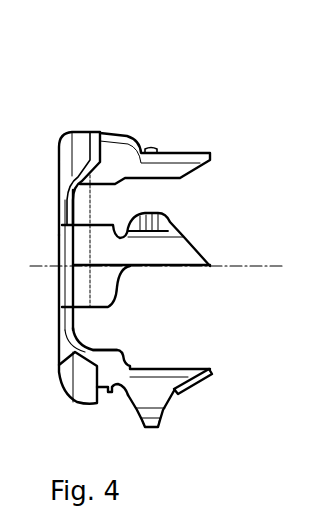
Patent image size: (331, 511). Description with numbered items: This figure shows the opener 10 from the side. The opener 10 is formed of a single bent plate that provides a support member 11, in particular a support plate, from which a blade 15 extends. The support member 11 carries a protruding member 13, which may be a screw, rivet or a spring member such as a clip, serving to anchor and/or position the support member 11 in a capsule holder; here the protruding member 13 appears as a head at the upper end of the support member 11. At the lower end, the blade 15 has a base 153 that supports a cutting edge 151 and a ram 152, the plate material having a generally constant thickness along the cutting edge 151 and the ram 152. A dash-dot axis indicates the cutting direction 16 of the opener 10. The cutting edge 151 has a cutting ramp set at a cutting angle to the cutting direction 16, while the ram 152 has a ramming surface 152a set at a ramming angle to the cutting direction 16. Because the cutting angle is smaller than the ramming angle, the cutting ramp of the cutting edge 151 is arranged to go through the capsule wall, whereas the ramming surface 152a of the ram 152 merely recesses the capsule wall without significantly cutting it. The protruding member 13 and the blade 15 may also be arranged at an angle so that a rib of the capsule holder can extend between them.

The opener 10 is at (192, 66).
The support member 11 is at (58, 234).
The protruding member 13 is at (80, 138).
The blade 15 is at (128, 366).
The cutting direction 16 is at (263, 266).
The cutting edge 151 is at (194, 381).
The ram 152 is at (140, 418).
The ramming surface 152a is at (163, 420).
The base 153 is at (109, 363).